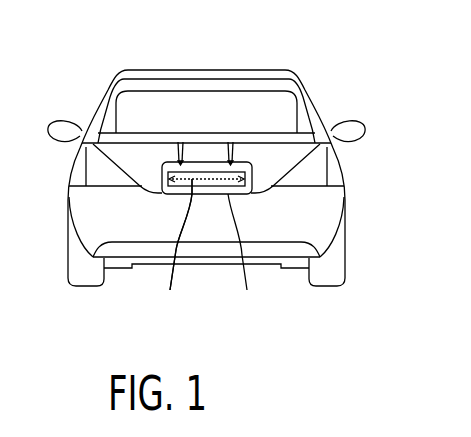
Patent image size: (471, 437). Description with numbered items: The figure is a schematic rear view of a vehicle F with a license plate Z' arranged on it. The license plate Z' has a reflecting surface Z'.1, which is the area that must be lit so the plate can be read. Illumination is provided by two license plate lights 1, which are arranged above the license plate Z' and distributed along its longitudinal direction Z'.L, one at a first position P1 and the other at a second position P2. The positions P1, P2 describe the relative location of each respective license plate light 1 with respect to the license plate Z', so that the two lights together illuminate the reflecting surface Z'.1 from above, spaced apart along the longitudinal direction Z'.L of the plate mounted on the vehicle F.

The license plate light 1 is at (228, 142).
The first position P1 is at (178, 142).
The second position P2 is at (233, 142).
The vehicle F is at (312, 107).
The license plate Z' is at (171, 252).
The reflecting surface Z'.1 is at (187, 252).
The longitudinal direction Z'.L is at (254, 259).